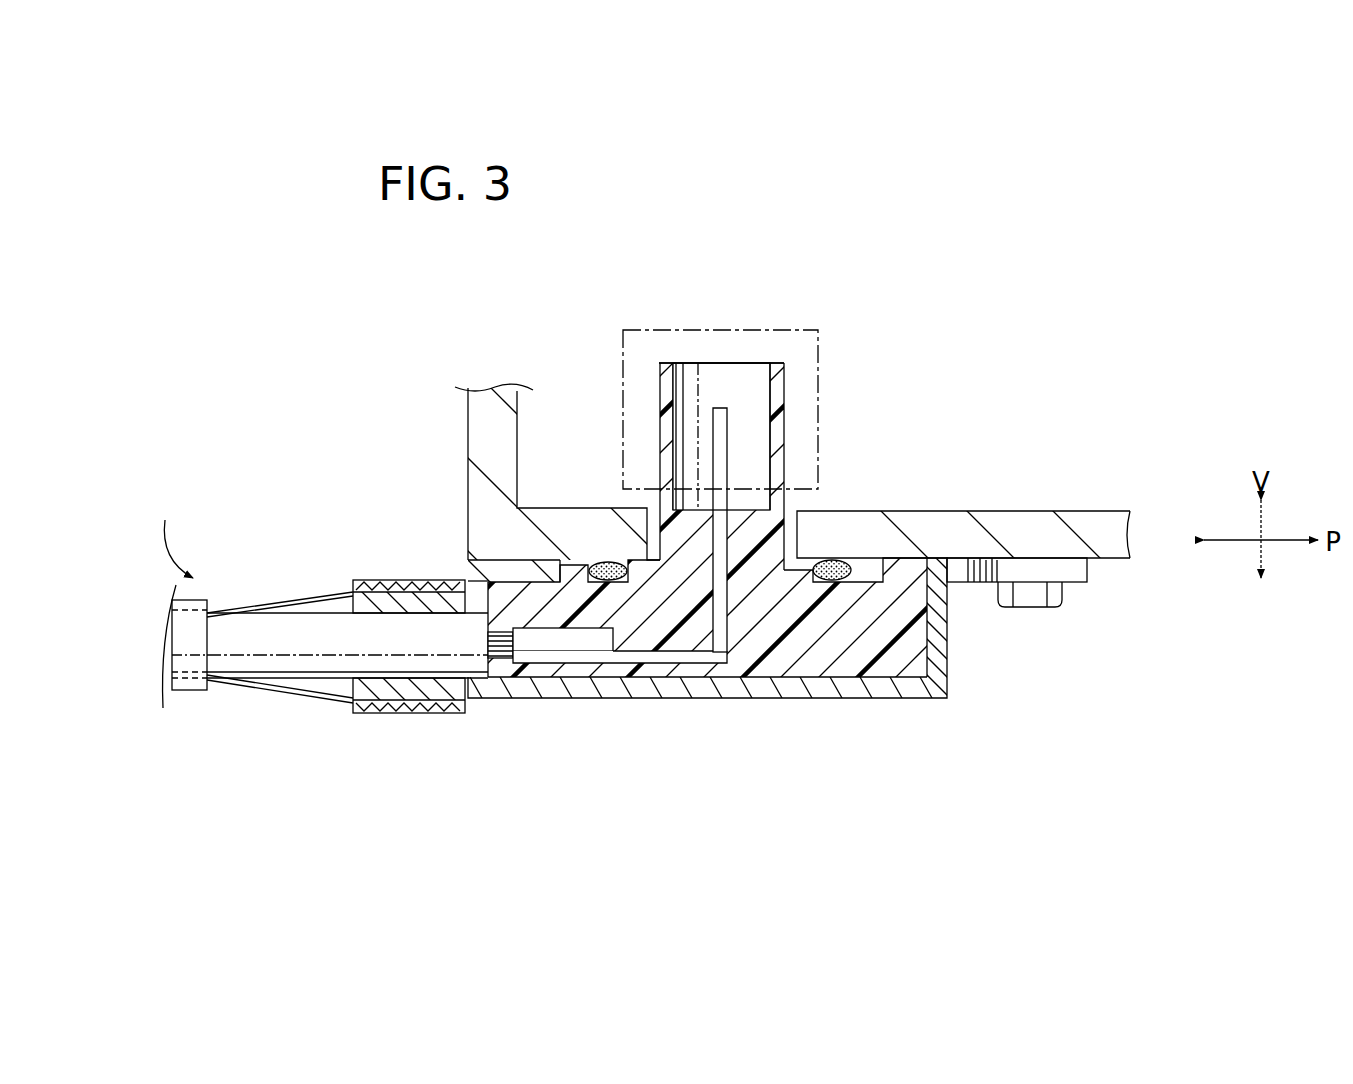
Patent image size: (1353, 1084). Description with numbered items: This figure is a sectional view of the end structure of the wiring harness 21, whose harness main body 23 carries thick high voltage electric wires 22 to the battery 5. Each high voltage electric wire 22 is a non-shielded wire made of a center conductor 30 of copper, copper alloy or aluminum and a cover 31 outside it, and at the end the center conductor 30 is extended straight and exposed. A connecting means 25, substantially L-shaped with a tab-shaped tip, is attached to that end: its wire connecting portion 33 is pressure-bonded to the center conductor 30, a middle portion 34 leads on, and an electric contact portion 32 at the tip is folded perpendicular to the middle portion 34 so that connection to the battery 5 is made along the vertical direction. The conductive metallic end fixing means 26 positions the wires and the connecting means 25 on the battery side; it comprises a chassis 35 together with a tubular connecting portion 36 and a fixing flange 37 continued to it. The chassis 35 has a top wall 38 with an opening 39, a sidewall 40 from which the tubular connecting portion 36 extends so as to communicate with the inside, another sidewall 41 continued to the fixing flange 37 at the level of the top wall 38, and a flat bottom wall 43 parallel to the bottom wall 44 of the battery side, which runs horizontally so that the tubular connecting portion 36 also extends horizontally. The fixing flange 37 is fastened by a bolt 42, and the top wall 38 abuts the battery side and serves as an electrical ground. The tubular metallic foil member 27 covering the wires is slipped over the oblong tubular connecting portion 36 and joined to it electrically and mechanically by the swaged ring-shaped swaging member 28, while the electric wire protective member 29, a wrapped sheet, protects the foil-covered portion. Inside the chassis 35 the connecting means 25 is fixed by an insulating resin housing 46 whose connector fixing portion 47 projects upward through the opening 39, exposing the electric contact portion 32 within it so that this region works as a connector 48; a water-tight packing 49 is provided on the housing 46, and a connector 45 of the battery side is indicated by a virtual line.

The battery 5 is at (912, 383).
The wiring harness 21 is at (169, 532).
The high voltage electric wire 22 is at (270, 652).
The harness main body 23 is at (193, 693).
The connecting means 25 is at (725, 620).
The end fixing means 26 is at (940, 670).
The tubular metallic foil member 27 is at (298, 598).
The ring-shaped swaging member 28 is at (388, 585).
The electric wire protective member 29 is at (190, 632).
The center conductor 30 is at (508, 658).
The cover 31 is at (470, 660).
The electric contact portion 32 is at (722, 424).
The wire connecting portion 33 is at (577, 652).
The middle portion 34 is at (700, 660).
The chassis 35 is at (755, 688).
The tubular connecting portion 36 is at (400, 690).
The fixing flange 37 is at (1073, 568).
The top wall 38 is at (528, 568).
The opening 39 is at (597, 573).
The sidewall 40 is at (490, 580).
The sidewall 41 is at (940, 620).
The bolt 42 is at (1033, 598).
The bottom wall 43 is at (660, 690).
The bottom wall 44 is at (885, 525).
The connector 45 is at (745, 328).
The housing 46 is at (660, 488).
The connector fixing portion 47 is at (777, 454).
The connector 48 is at (687, 363).
The water-tight packing 49 is at (835, 566).